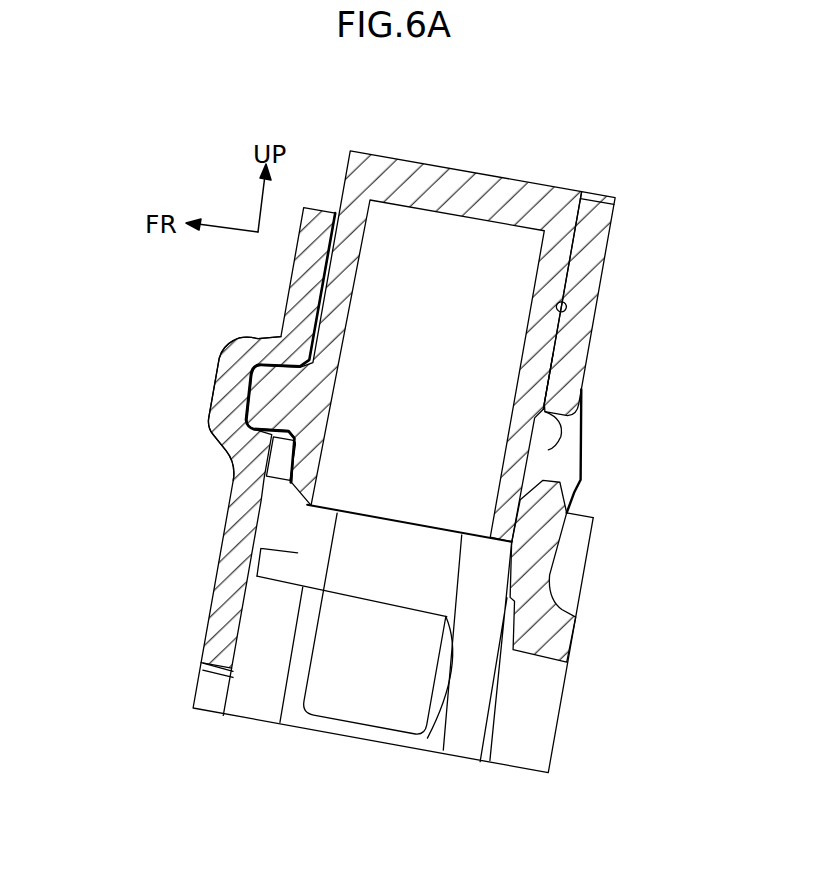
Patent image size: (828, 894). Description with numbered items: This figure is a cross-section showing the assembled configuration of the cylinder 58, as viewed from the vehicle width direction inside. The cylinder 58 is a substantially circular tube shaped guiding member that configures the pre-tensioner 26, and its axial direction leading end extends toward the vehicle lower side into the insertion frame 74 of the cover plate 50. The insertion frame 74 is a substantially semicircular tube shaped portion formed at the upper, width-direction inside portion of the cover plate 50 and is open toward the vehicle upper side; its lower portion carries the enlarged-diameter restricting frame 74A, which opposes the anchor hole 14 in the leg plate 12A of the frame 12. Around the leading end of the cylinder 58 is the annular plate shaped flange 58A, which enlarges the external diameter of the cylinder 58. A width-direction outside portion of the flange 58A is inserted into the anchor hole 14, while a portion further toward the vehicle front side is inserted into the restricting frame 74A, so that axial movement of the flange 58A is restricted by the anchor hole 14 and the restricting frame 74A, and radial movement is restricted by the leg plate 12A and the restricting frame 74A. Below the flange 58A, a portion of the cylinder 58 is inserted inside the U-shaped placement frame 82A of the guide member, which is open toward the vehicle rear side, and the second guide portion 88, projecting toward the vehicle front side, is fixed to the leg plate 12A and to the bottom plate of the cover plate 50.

The frame 12 is at (578, 210).
The leg plate 12A is at (574, 272).
The anchor hole 14 is at (565, 432).
The pre-tensioner 26 is at (338, 183).
The cover plate 50 is at (223, 550).
The cylinder 58 is at (565, 342).
The flange 58A is at (255, 386).
The insertion frame 74 is at (292, 272).
The restricting frame 74A is at (240, 342).
The placement frame 82A is at (277, 483).
The second guide portion 88 is at (400, 530).